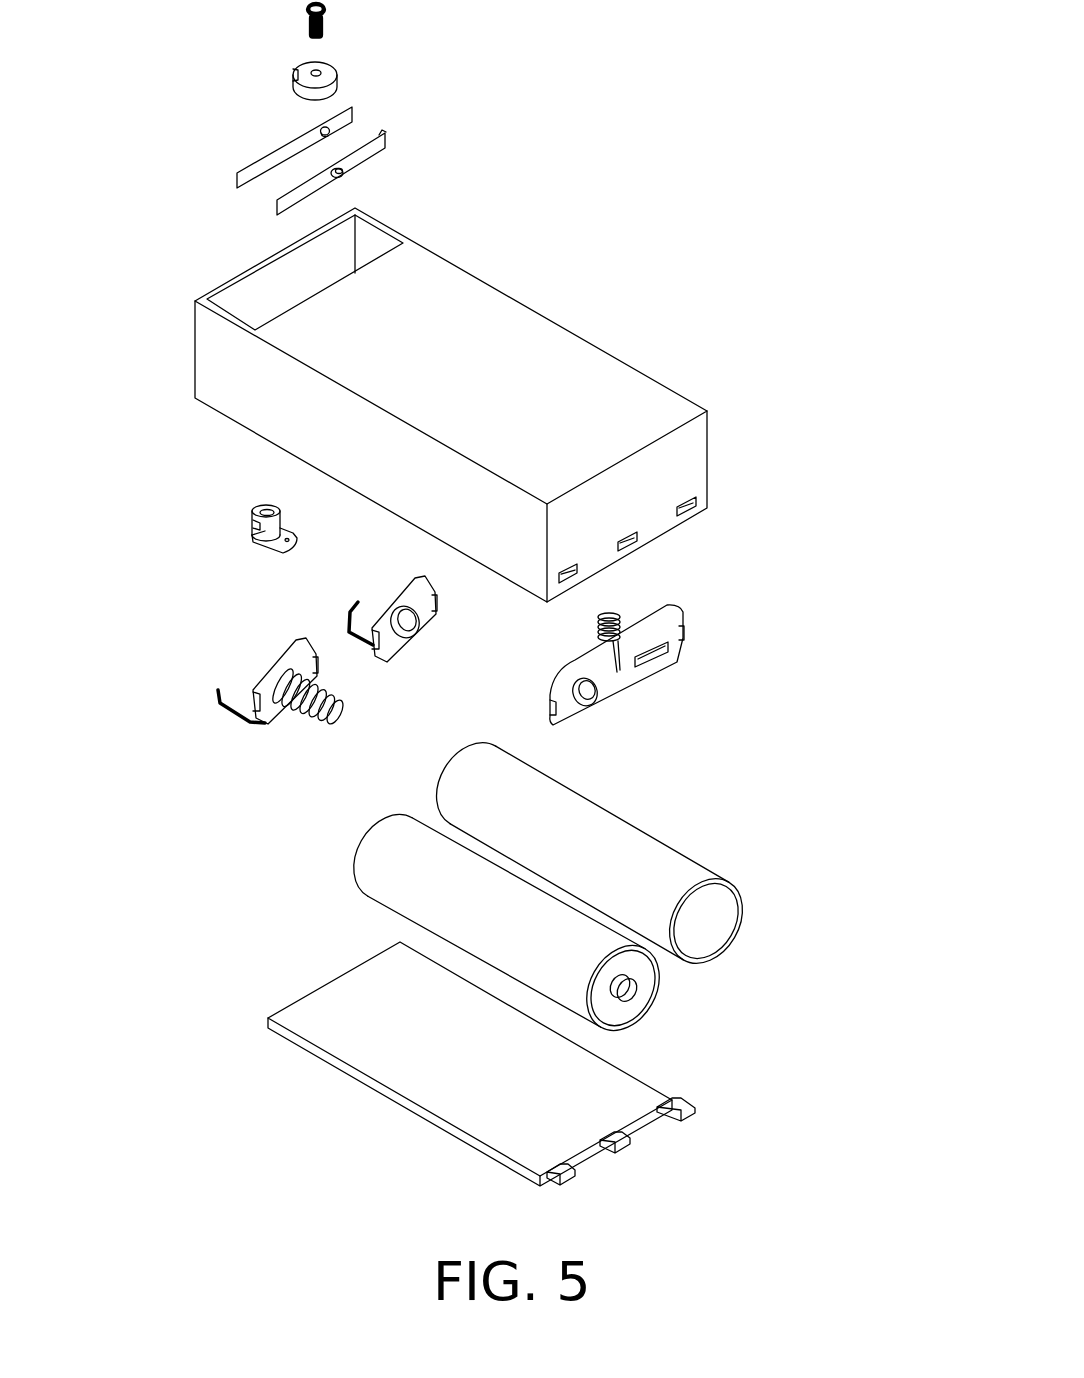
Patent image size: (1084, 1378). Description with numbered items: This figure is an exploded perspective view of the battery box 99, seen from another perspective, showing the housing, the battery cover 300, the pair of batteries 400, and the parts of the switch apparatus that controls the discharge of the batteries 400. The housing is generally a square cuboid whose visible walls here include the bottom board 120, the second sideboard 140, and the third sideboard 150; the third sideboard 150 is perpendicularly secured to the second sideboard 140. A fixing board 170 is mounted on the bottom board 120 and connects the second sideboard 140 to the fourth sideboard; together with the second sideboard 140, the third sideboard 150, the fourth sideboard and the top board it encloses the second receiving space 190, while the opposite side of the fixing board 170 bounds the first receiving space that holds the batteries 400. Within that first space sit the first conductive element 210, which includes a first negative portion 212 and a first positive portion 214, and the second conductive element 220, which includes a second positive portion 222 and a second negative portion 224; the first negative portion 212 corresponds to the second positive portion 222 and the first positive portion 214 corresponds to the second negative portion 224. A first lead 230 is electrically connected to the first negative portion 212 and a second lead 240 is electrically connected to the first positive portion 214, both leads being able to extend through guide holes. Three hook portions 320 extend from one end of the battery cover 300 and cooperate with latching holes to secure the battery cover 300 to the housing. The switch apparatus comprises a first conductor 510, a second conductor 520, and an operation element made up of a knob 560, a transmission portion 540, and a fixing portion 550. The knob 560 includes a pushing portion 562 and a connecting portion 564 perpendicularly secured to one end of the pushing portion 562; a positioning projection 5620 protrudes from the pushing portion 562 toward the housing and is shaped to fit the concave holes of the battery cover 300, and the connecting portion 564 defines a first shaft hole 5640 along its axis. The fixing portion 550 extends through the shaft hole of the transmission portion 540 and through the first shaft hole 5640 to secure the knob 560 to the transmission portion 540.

The battery box 99 is at (728, 67).
The bottom board 120 is at (472, 337).
The second sideboard 140 is at (251, 380).
The third sideboard 150 is at (240, 302).
The fixing board 170 is at (303, 295).
The second receiving space 190 is at (333, 255).
The first conductive element 210 is at (428, 717).
The first negative portion 212 is at (382, 643).
The first positive portion 214 is at (338, 718).
The second conductive element 220 is at (780, 693).
The second positive portion 222 is at (662, 660).
The second negative portion 224 is at (573, 710).
The first lead 230 is at (350, 601).
The second lead 240 is at (232, 715).
The battery cover 300 is at (501, 1063).
The hook portions 320 is at (678, 1098).
The batteries 400 is at (632, 858).
The first conductor 510 is at (280, 157).
The second conductor 520 is at (277, 208).
The transmission portion 540 is at (302, 67).
The fixing portion 550 is at (327, 14).
The knob 560 is at (150, 493).
The pushing portion 562 is at (228, 576).
The connecting portion 564 is at (202, 494).
The positioning projection 5620 is at (287, 553).
The first shaft hole 5640 is at (260, 506).